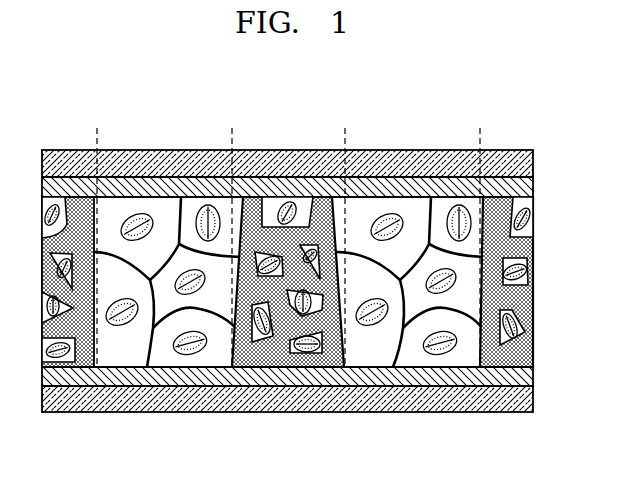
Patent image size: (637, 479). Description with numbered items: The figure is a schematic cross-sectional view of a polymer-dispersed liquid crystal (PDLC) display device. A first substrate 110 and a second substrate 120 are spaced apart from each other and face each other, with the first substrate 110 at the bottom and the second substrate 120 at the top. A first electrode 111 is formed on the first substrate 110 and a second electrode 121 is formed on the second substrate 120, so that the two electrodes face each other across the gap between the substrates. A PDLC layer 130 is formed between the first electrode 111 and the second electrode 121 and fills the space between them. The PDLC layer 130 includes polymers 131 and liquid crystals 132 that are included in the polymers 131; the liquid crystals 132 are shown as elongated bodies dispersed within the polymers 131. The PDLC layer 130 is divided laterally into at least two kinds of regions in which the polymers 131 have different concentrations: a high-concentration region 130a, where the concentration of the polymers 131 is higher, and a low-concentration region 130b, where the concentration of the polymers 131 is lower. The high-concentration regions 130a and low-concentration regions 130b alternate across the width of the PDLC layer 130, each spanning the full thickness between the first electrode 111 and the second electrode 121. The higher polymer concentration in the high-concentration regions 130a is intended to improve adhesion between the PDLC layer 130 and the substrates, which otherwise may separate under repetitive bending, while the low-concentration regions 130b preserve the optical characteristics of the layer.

The first substrate 110 is at (530, 401).
The first electrode 111 is at (531, 377).
The second substrate 120 is at (531, 166).
The second electrode 121 is at (531, 190).
The PDLC layer 130 is at (541, 199).
The high-concentration region 130a is at (97, 127).
The low-concentration region 130b is at (232, 127).
The polymers 131 is at (297, 355).
The liquid crystals 132 is at (441, 356).